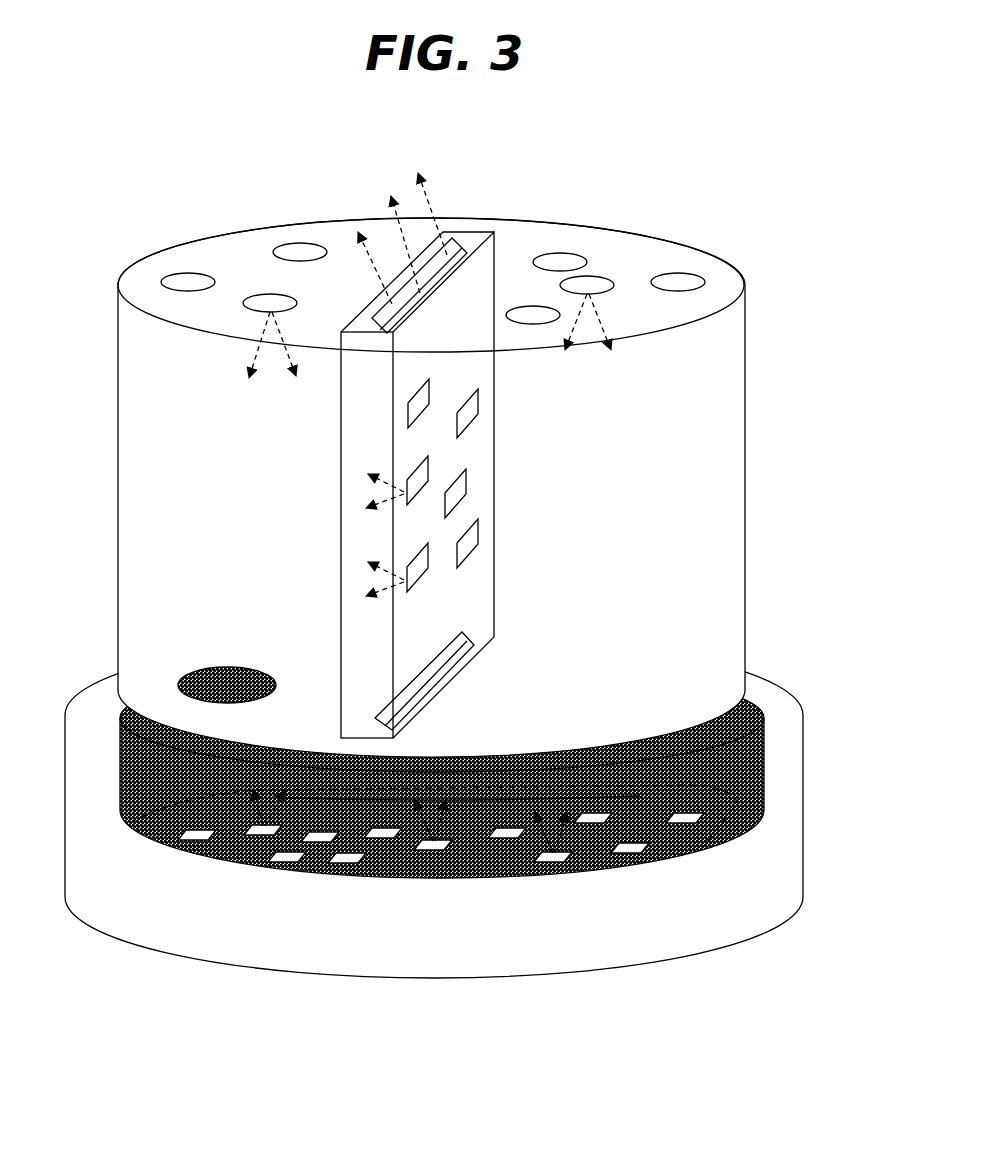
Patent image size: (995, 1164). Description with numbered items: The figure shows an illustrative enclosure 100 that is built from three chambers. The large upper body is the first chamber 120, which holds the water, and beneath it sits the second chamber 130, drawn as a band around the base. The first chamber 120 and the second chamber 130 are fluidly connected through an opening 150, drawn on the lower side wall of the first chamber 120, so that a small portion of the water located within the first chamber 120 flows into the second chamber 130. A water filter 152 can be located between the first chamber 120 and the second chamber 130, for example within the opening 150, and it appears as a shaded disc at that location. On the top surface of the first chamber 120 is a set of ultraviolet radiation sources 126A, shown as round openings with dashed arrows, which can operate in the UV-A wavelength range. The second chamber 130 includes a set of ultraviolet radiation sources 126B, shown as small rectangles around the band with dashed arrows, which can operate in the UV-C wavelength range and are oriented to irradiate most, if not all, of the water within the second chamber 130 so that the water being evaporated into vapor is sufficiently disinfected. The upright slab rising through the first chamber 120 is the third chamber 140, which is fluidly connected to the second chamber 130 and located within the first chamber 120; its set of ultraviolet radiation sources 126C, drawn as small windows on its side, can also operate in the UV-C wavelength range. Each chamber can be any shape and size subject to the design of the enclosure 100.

The enclosure 100 is at (126, 193).
The first chamber 120 is at (605, 227).
The set of ultraviolet radiation sources 126A is at (686, 268).
The set of ultraviolet radiation sources 126B is at (693, 824).
The set of ultraviolet radiation sources 126C is at (472, 416).
The second chamber 130 is at (765, 782).
The third chamber 140 is at (477, 230).
The opening 150 is at (180, 688).
The water filter 152 is at (215, 677).